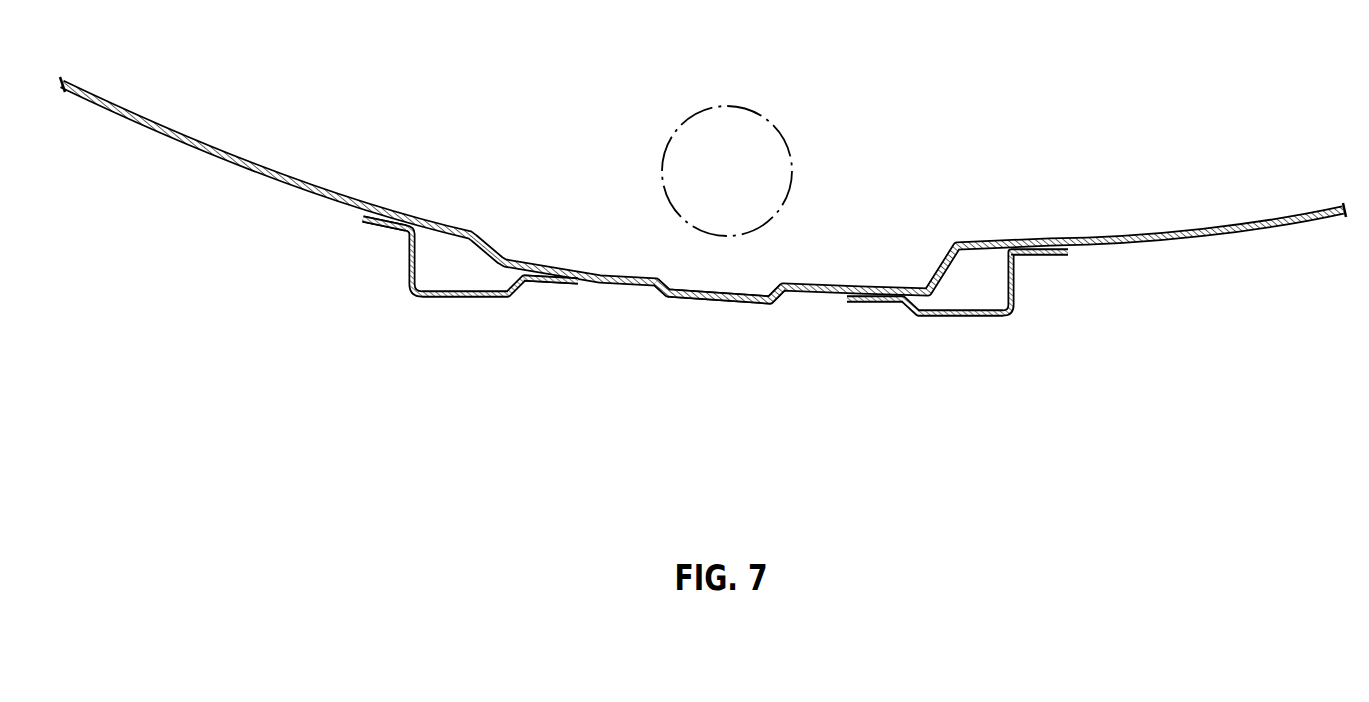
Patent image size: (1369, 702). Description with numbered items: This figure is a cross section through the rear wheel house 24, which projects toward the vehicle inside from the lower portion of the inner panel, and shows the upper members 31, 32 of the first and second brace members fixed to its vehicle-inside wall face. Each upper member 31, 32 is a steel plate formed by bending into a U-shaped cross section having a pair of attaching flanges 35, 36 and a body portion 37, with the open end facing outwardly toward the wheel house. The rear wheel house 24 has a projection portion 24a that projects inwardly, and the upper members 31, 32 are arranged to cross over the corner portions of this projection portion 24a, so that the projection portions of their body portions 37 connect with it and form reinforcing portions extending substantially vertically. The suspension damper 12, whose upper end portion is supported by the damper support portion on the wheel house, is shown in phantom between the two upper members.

The suspension damper 12 is at (792, 157).
The rear wheel house 24 is at (1177, 243).
The projection portion 24a is at (638, 287).
The upper member 31 is at (419, 308).
The upper member 32 is at (1003, 323).
The attaching flange 35 is at (378, 219).
The attaching flange 36 is at (552, 285).
The body portion 37 is at (476, 300).